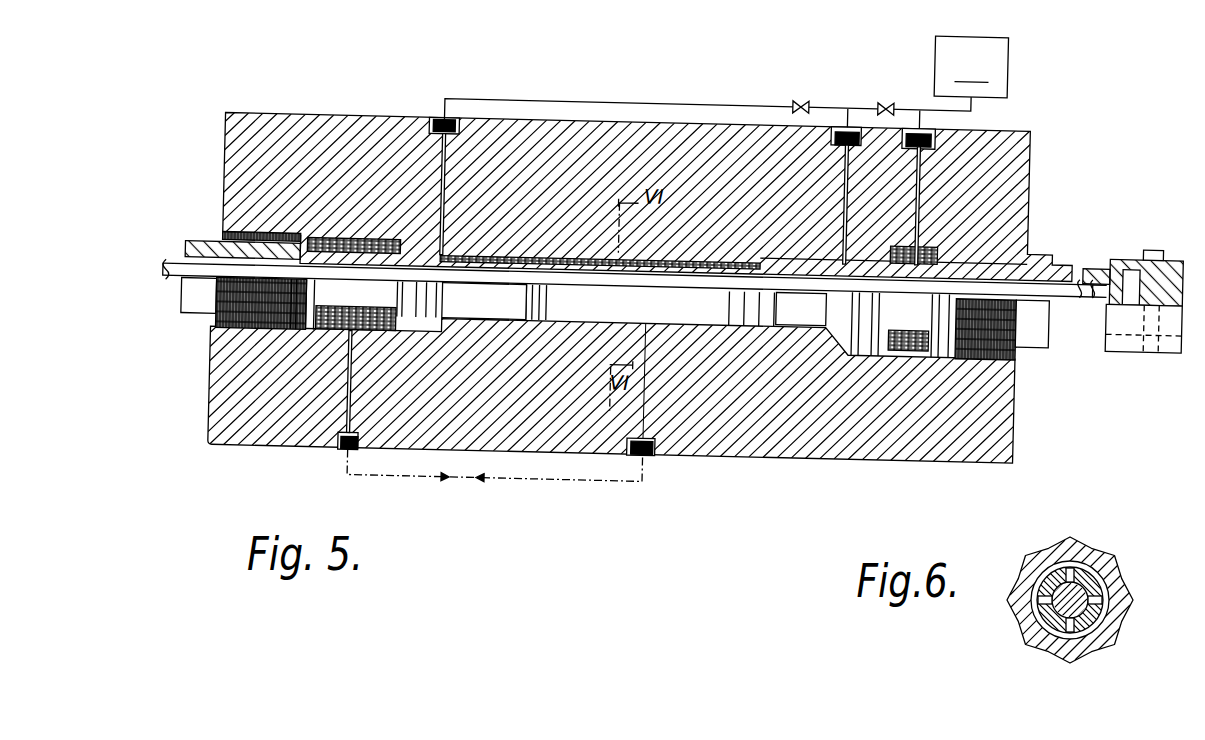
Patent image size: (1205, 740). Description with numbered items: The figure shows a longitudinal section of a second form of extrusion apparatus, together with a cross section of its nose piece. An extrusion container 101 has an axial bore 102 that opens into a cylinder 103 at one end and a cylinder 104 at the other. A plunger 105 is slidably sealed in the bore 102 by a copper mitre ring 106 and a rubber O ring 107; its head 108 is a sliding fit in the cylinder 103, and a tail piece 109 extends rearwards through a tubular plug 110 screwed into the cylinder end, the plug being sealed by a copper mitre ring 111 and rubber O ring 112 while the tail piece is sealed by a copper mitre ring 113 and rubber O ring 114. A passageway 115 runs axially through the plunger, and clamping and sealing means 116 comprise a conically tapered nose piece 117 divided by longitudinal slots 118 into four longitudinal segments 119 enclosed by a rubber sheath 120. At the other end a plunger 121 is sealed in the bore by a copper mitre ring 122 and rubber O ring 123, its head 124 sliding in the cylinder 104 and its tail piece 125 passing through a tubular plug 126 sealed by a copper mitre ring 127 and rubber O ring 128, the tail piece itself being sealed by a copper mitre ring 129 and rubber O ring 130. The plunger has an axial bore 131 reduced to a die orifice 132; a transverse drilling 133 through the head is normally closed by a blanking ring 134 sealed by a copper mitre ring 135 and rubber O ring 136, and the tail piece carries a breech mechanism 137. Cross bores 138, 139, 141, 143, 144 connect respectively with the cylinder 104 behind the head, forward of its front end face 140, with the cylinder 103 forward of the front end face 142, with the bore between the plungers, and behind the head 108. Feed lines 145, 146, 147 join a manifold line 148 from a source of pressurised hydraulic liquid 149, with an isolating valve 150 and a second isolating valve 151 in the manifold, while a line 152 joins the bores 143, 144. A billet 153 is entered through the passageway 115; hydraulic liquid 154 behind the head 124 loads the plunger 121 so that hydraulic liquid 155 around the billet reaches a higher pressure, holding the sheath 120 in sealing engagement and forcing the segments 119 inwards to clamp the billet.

In FIG. 5, the extrusion container 101 is at (230, 375).
In FIG. 6, the extrusion container 101 is at (1113, 577).
In FIG. 5, the axial bore 102 is at (600, 253).
In FIG. 6, the axial bore 102 is at (1108, 600).
In FIG. 5, the cylinder 103 is at (418, 243).
In FIG. 5, the cylinder 104 is at (943, 243).
In FIG. 5, the plunger 105 is at (503, 257).
In FIG. 5, the copper mitre ring 106 is at (533, 257).
In FIG. 5, the rubber O ring 107 is at (560, 257).
In FIG. 5, the head 108 is at (437, 167).
In FIG. 5, the tail piece 109 is at (362, 268).
In FIG. 5, the tubular plug 110 is at (238, 313).
In FIG. 5, the copper mitre ring 111 is at (307, 247).
In FIG. 5, the rubber O ring 112 is at (303, 240).
In FIG. 5, the copper mitre ring 113 is at (227, 233).
In FIG. 5, the rubber O ring 114 is at (308, 252).
In FIG. 5, the passageway 115 is at (337, 257).
In FIG. 5, the clamping and sealing means 116 is at (583, 312).
In FIG. 5, the nose piece 117 is at (660, 257).
In FIG. 6, the longitudinal slots 118 is at (1083, 573).
In FIG. 5, the longitudinal segments 119 is at (697, 257).
In FIG. 6, the longitudinal segments 119 is at (1053, 572).
In FIG. 5, the rubber sheath 120 is at (737, 257).
In FIG. 6, the rubber sheath 120 is at (1117, 637).
In FIG. 5, the plunger 121 is at (797, 320).
In FIG. 5, the copper mitre ring 122 is at (767, 327).
In FIG. 5, the rubber O ring 123 is at (748, 320).
In FIG. 5, the head 124 is at (867, 343).
In FIG. 5, the tail piece 125 is at (1012, 262).
In FIG. 5, the tubular plug 126 is at (1003, 247).
In FIG. 5, the copper mitre ring 127 is at (945, 352).
In FIG. 5, the rubber O ring 128 is at (955, 358).
In FIG. 5, the copper mitre ring 129 is at (993, 247).
In FIG. 5, the rubber O ring 130 is at (973, 243).
In FIG. 5, the bore 131 is at (800, 250).
In FIG. 5, the die orifice 132 is at (763, 260).
In FIG. 5, the transverse drilling 133 is at (905, 342).
In FIG. 5, the blanking ring 134 is at (883, 253).
In FIG. 5, the copper mitre ring 135 is at (842, 250).
In FIG. 5, the rubber O ring 136 is at (880, 253).
In FIG. 5, the breech mechanism 137 is at (1137, 260).
In FIG. 5, the cross bore 138 is at (900, 243).
In FIG. 5, the cross bore 139 is at (863, 243).
In FIG. 5, the front end face 140 is at (840, 255).
In FIG. 5, the cross bore 141 is at (438, 114).
In FIG. 5, the front end face 142 is at (355, 308).
In FIG. 5, the cross bore 143 is at (645, 422).
In FIG. 5, the cross bore 144 is at (350, 397).
In FIG. 5, the feed line 145 is at (917, 130).
In FIG. 5, the feed line 146 is at (858, 126).
In FIG. 5, the feed line 147 is at (441, 97).
In FIG. 5, the manifold line 148 is at (620, 125).
In FIG. 5, the source of pressurised hydraulic liquid 149 is at (971, 67).
In FIG. 5, the isolating valve 150 is at (805, 104).
In FIG. 5, the second isolating valve 151 is at (882, 98).
In FIG. 5, the line 152 is at (360, 479).
In FIG. 5, the billet 153 is at (484, 301).
In FIG. 5, the hydraulic liquid 154 is at (922, 347).
In FIG. 5, the hydraulic liquid 155 is at (330, 328).